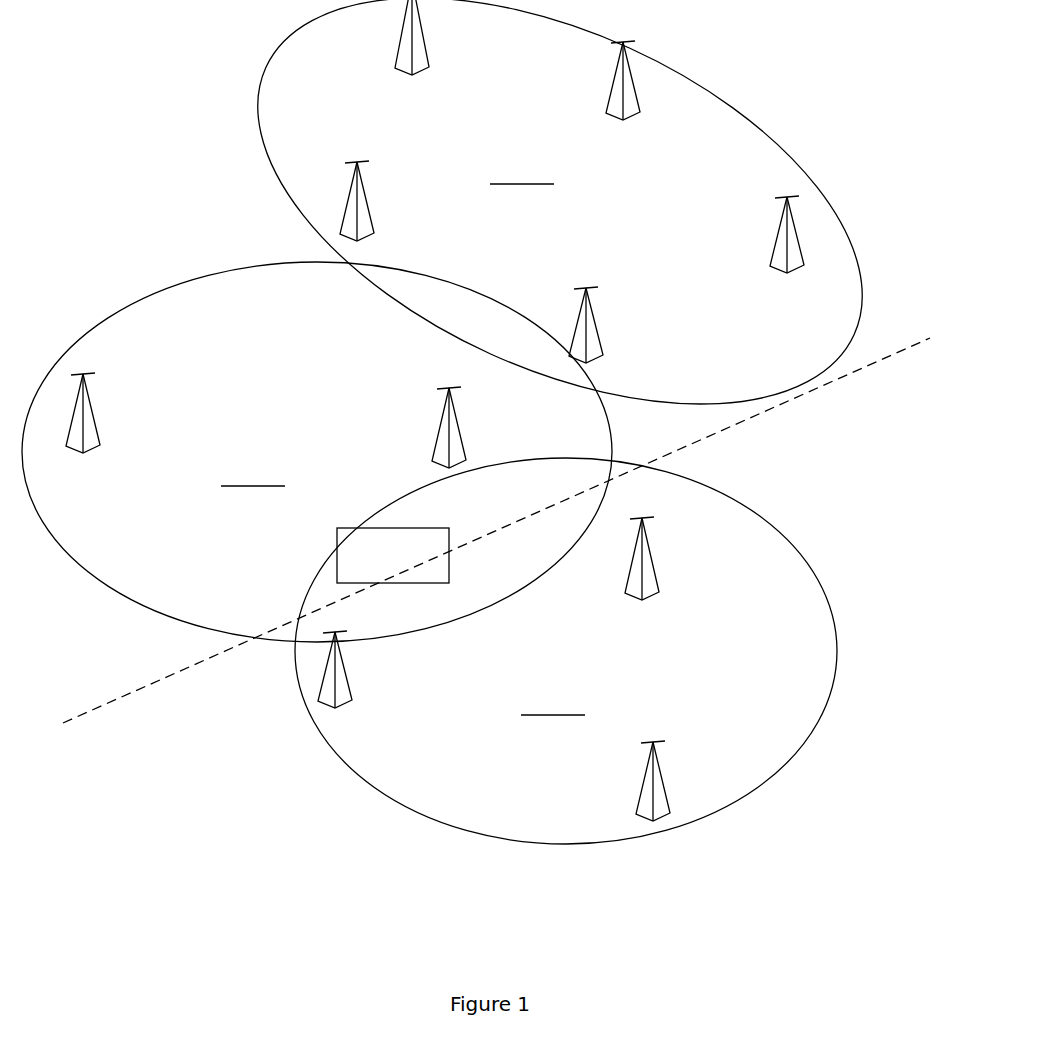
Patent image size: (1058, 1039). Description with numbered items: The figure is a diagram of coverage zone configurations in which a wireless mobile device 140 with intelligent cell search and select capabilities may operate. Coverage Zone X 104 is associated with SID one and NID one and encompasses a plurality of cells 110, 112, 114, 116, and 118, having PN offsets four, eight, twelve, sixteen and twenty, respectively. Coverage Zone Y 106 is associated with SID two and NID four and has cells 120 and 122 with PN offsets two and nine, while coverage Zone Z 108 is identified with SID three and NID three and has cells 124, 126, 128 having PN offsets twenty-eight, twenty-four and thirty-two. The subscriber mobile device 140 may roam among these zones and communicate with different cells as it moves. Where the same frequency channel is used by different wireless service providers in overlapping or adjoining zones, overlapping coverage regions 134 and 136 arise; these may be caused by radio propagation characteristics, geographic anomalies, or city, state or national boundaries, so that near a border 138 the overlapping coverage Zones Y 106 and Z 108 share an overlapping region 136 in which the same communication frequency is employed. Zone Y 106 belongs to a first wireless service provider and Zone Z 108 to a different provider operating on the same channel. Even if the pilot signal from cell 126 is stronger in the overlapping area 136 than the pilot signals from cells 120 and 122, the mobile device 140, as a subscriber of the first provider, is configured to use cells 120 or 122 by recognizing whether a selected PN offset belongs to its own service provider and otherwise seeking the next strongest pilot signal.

The coverage Zone X 104 is at (550, 243).
The coverage Zone Y 106 is at (317, 452).
The coverage Zone Z 108 is at (566, 651).
The cell 110 is at (377, 218).
The cell 112 is at (431, 37).
The cell 114 is at (663, 97).
The cell 116 is at (780, 261).
The cell 118 is at (630, 328).
The cell 120 is at (125, 413).
The cell 122 is at (465, 427).
The cell 124 is at (683, 568).
The cell 126 is at (380, 672).
The cell 128 is at (665, 781).
The overlapping coverage region 134 is at (477, 342).
The overlapping coverage region 136 is at (574, 492).
The border 138 is at (490, 551).
The mobile device 140 is at (434, 557).